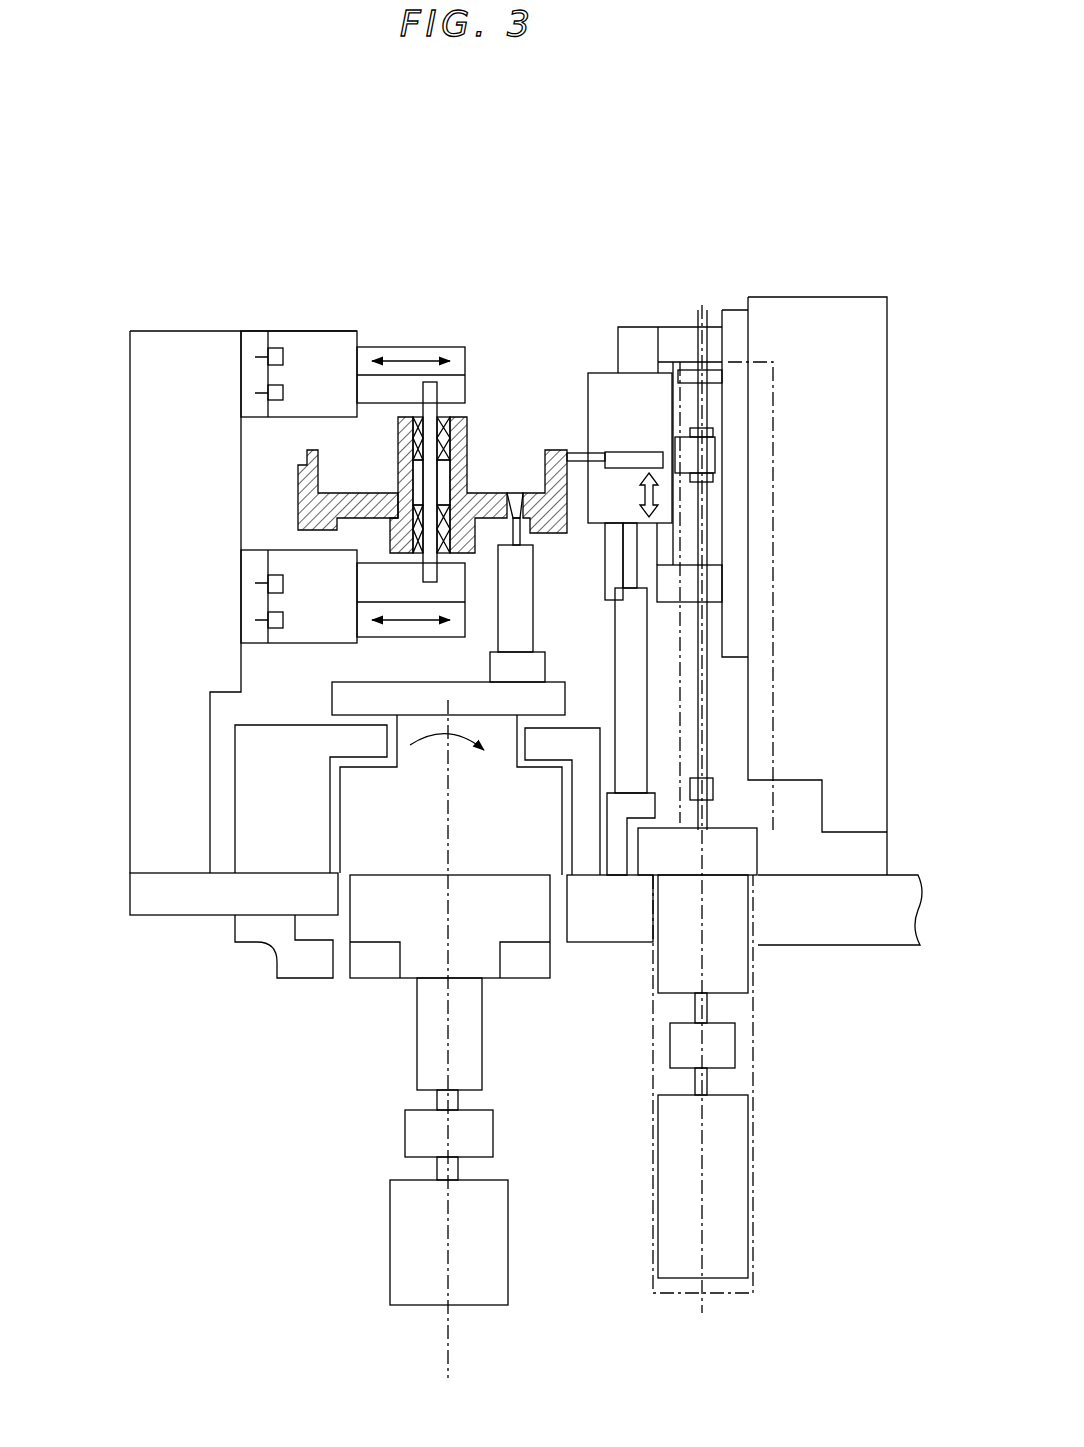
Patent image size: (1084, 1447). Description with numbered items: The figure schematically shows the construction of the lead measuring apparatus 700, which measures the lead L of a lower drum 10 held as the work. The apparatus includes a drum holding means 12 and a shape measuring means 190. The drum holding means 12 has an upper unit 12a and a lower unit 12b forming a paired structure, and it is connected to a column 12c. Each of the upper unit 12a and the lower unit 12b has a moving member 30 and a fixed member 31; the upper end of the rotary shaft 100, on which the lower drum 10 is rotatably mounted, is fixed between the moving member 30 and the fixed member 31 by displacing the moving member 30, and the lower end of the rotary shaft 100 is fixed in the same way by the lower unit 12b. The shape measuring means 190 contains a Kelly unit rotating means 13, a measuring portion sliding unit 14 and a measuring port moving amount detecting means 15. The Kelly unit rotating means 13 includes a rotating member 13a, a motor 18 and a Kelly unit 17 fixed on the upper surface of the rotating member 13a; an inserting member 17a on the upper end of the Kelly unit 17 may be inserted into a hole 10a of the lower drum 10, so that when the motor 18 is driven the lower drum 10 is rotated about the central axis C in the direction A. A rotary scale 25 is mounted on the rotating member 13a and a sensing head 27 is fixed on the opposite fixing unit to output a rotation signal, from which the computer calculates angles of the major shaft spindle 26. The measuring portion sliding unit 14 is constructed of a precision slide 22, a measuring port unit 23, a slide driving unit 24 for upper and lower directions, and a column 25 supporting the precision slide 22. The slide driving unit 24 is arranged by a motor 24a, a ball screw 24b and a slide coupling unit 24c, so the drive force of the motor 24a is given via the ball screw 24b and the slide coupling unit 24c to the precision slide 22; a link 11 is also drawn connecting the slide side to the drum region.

The lead measuring apparatus 700 is at (557, 207).
The shape measuring means 190 is at (763, 278).
The measuring portion sliding unit 14 is at (703, 310).
The column 25 is at (383, 962).
The precision slide 22 is at (598, 385).
The measuring port unit 23 is at (657, 453).
The slide coupling unit 24c is at (713, 453).
The ball screw 24b is at (697, 535).
The slide driving unit for upper and lower directions 24 is at (753, 1080).
The motor 24a is at (722, 1203).
The moving member 30 is at (400, 347).
The fixed member 31 is at (362, 383).
The lower drum 10 is at (480, 493).
The inserting member 17a is at (495, 493).
The hole 10a is at (518, 500).
The lead L is at (305, 452).
The link 11 is at (567, 440).
The drum holding means 12 is at (226, 552).
The upper unit 12a is at (283, 377).
The lower unit 12b is at (283, 604).
The column 12c is at (187, 900).
The rotary shaft 100 is at (427, 482).
The Kelly unit 17 is at (513, 602).
The measuring port moving amount detecting means 15 is at (633, 752).
The rotation direction A is at (432, 752).
The major shaft spindle 26 is at (490, 822).
The sensing head 27 is at (310, 980).
The rotating member 13a is at (452, 1013).
The Kelly unit rotating means 13 is at (372, 1187).
The motor 18 is at (462, 1225).
The central axis C is at (448, 1353).